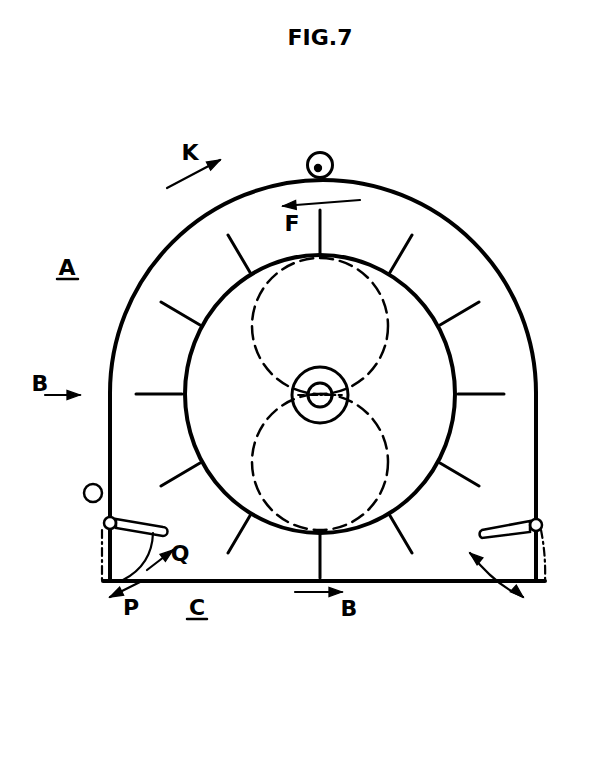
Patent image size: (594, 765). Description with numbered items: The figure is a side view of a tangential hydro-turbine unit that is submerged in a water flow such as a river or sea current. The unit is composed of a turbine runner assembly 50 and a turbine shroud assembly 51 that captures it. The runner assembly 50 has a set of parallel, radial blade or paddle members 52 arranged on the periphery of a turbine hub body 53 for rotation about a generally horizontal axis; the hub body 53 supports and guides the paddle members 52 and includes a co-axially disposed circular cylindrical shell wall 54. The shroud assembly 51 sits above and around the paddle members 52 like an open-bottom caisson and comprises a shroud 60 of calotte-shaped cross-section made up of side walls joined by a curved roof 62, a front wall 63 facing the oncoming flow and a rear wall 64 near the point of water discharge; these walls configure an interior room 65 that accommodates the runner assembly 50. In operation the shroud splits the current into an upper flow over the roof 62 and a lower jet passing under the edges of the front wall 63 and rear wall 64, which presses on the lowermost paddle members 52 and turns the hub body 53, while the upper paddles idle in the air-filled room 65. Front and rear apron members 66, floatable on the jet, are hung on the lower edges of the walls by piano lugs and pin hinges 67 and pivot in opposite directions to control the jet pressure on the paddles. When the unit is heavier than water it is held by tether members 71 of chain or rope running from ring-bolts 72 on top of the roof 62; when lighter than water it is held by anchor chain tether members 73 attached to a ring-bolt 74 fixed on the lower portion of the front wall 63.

The turbine runner assembly 50 is at (158, 677).
The turbine shroud assembly 51 is at (132, 158).
The blade or paddle members 52 is at (313, 558).
The turbine hub body 53 is at (227, 293).
The circular cylindrical shell wall 54 is at (422, 293).
The shroud 60 is at (537, 383).
The curved roof 62 is at (386, 190).
The front wall 63 is at (108, 450).
The rear wall 64 is at (537, 477).
The interior room 65 is at (152, 342).
The apron members 66 is at (150, 581).
The piano lugs and pin hinges 67 is at (100, 526).
The tether members 71 is at (311, 157).
The ring-bolts 72 is at (333, 164).
The anchor chain tether members 73 is at (104, 527).
The ring-bolt 74 is at (84, 492).